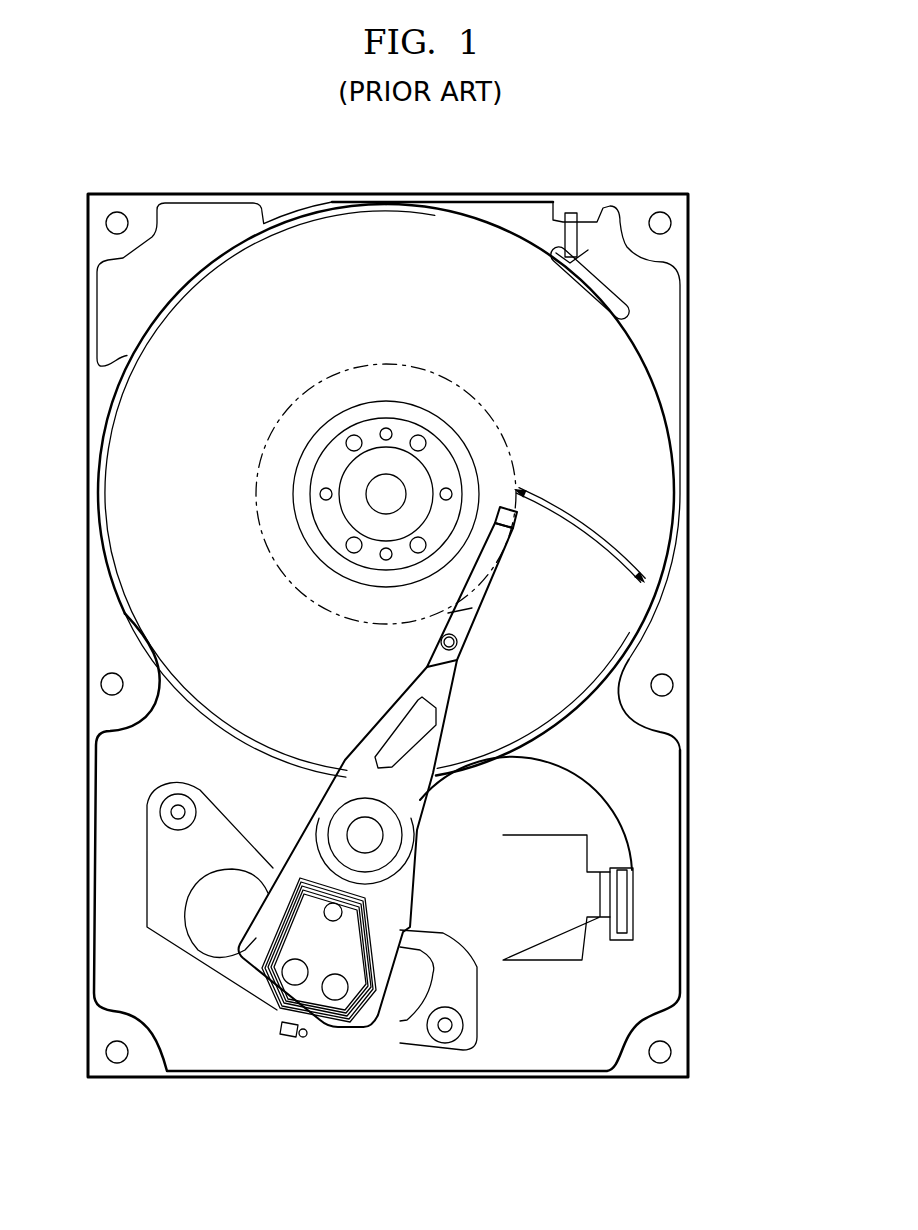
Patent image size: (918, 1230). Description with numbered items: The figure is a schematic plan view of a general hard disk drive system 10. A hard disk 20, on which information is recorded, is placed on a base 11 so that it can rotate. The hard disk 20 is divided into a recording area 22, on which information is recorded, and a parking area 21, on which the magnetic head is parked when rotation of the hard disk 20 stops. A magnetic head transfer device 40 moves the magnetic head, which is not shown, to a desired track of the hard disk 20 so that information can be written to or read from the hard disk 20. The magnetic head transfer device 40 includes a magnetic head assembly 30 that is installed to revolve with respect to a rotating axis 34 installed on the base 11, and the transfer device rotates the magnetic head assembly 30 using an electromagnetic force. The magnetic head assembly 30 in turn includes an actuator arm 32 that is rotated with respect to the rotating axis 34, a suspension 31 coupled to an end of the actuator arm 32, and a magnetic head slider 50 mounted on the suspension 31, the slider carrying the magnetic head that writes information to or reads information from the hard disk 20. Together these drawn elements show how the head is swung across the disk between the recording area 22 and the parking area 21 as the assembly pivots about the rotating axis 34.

The hard disk drive system 10 is at (702, 160).
The base 11 is at (668, 808).
The hard disk 20 is at (658, 371).
The parking area 21 is at (295, 491).
The recording area 22 is at (257, 491).
The magnetic head assembly 30 is at (362, 701).
The suspension 31 is at (475, 614).
The actuator arm 32 is at (440, 720).
The rotating axis 34 is at (356, 827).
The magnetic head transfer device 40 is at (130, 845).
The magnetic head slider 50 is at (516, 524).